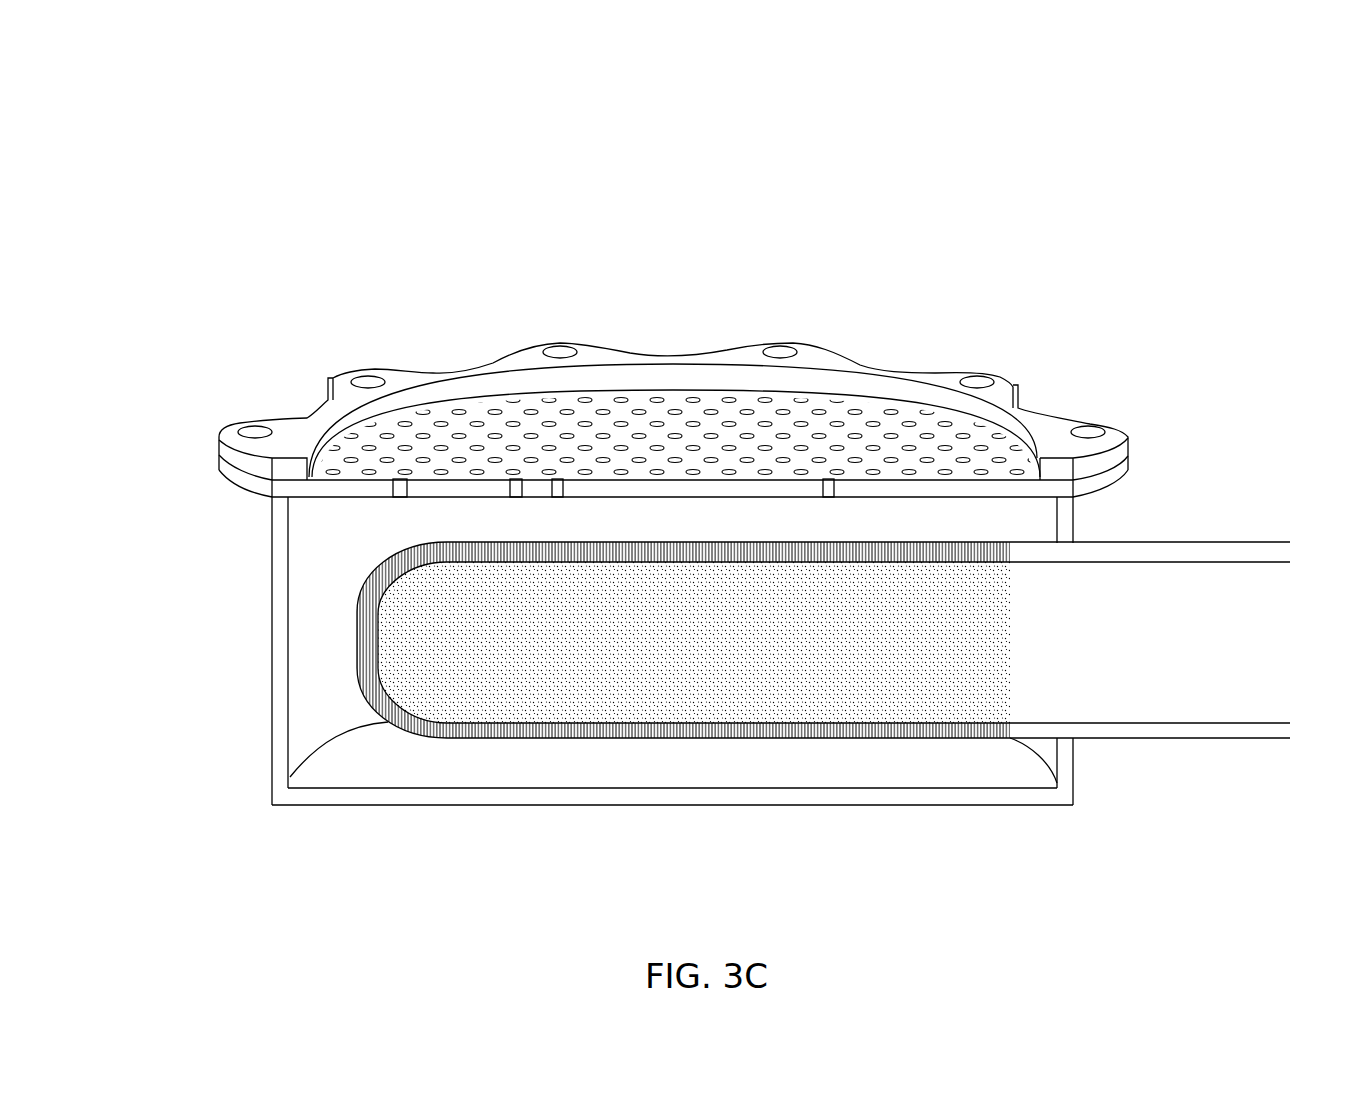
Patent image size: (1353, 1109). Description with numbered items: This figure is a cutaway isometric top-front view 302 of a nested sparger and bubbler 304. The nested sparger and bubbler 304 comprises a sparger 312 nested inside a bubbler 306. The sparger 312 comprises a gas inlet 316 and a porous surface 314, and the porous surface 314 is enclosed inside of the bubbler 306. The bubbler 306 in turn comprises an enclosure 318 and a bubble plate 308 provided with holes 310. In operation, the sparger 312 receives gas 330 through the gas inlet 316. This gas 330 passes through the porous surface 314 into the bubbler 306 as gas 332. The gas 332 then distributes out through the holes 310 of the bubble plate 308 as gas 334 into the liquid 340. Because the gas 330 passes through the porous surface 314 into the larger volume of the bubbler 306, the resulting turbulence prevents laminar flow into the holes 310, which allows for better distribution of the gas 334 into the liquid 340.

The cutaway isometric top-front view 302 is at (164, 129).
The nested sparger and bubbler 304 is at (356, 371).
The bubbler 306 is at (317, 567).
The bubble plate 308 is at (387, 432).
The holes 310 is at (462, 412).
The sparger 312 is at (1033, 732).
The porous surface 314 is at (760, 543).
The gas inlet 316 is at (1226, 553).
The enclosure 318 is at (575, 797).
The gas 330 is at (1232, 648).
The gas 332 is at (315, 695).
The gas 334 is at (831, 515).
The liquid 340 is at (655, 193).